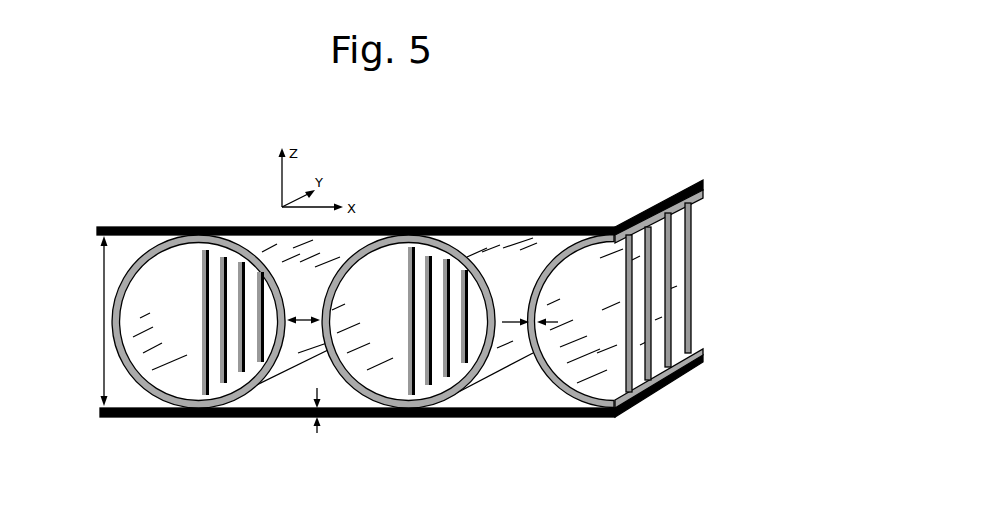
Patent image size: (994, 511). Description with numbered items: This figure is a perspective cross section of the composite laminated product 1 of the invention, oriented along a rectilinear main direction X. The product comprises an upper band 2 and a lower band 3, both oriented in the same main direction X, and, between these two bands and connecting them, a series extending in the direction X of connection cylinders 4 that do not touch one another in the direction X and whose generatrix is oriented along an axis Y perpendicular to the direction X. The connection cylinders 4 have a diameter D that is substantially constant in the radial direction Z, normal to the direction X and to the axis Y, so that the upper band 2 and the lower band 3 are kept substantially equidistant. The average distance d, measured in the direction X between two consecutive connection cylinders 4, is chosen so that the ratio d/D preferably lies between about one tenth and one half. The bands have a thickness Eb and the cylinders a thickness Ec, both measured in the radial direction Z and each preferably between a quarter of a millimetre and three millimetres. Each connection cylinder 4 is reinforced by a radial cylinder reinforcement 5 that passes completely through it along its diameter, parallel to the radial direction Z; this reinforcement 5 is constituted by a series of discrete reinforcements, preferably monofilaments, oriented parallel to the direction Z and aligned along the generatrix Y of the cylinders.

The composite laminated product 1 is at (502, 166).
The upper band 2 is at (118, 232).
The lower band 3 is at (128, 412).
The connection cylinder 4 is at (175, 400).
The radial cylinder reinforcement 5 is at (259, 273).
The diameter of the connection cylinders D is at (97, 321).
The average distance between consecutive connection cylinders d is at (303, 310).
The thickness of the cylinders Ec is at (529, 312).
The thickness of the bands Eb is at (303, 410).